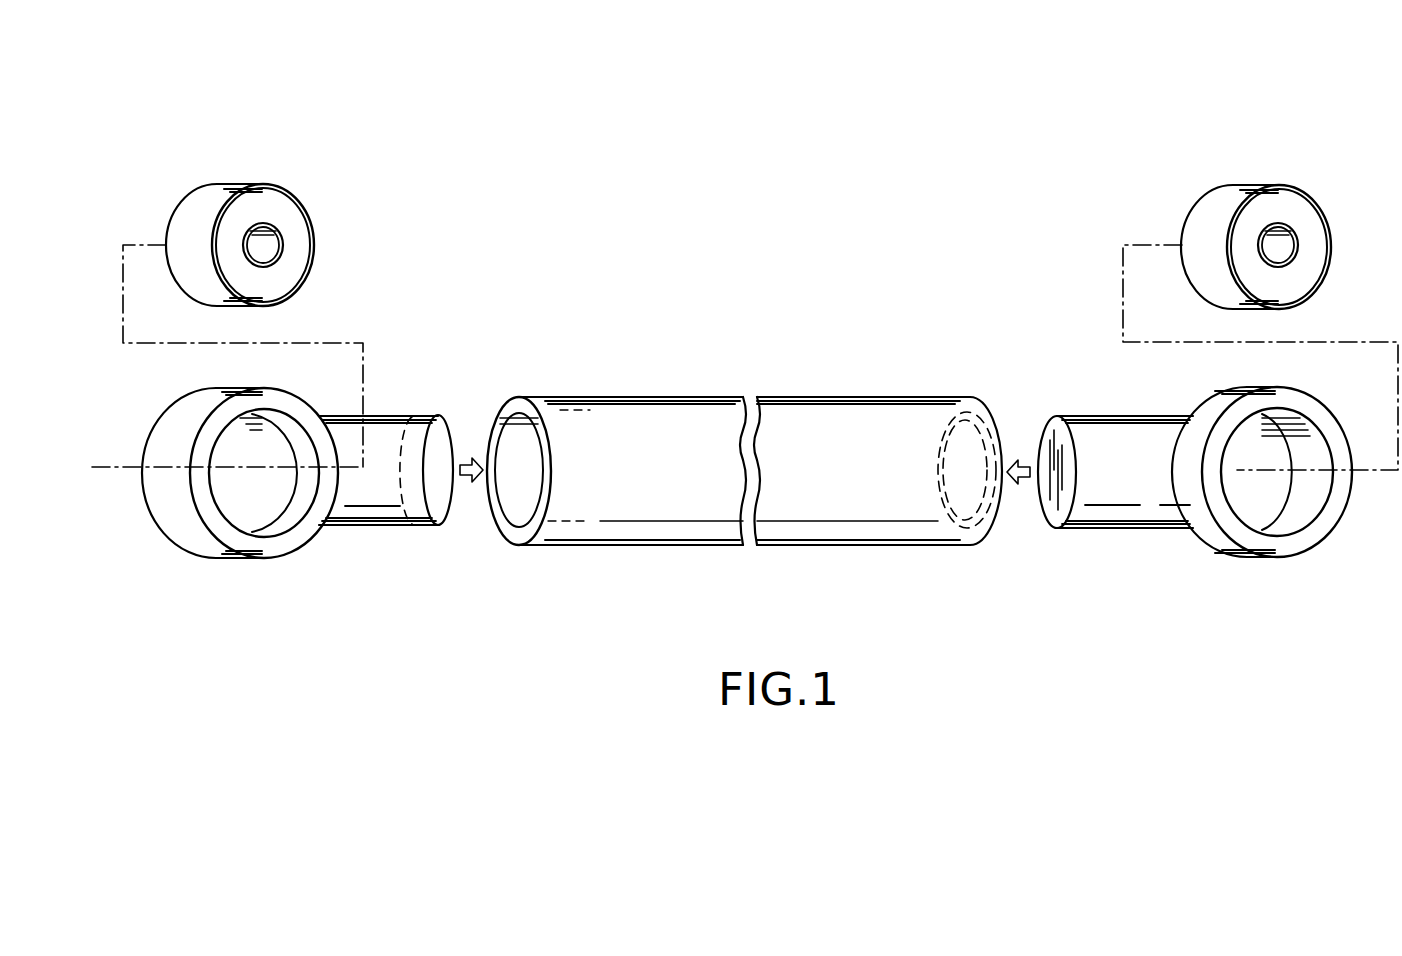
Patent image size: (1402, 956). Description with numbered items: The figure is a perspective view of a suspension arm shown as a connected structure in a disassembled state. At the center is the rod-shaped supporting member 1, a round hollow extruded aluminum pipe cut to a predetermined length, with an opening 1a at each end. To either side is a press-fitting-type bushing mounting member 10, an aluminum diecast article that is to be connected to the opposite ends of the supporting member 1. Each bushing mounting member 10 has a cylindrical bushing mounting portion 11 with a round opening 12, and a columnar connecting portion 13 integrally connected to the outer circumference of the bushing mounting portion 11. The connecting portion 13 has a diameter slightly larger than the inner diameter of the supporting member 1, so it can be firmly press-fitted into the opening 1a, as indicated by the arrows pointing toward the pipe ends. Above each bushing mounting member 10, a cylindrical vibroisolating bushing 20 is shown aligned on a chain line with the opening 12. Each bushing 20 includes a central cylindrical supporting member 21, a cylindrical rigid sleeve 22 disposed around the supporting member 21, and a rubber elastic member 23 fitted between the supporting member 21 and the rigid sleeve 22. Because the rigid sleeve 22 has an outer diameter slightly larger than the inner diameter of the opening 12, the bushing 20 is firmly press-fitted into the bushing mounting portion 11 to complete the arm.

The supporting member 1 is at (795, 408).
The opening 1a is at (528, 506).
The bushing mounting member 10 is at (282, 403).
The bushing mounting portion 11 is at (278, 545).
The opening 12 is at (228, 492).
The connecting portion 13 is at (377, 523).
The vibroisolating bushing 20 is at (264, 183).
The central cylindrical supporting member 21 is at (292, 245).
The rigid sleeve 22 is at (297, 198).
The rubber elastic member 23 is at (288, 273).